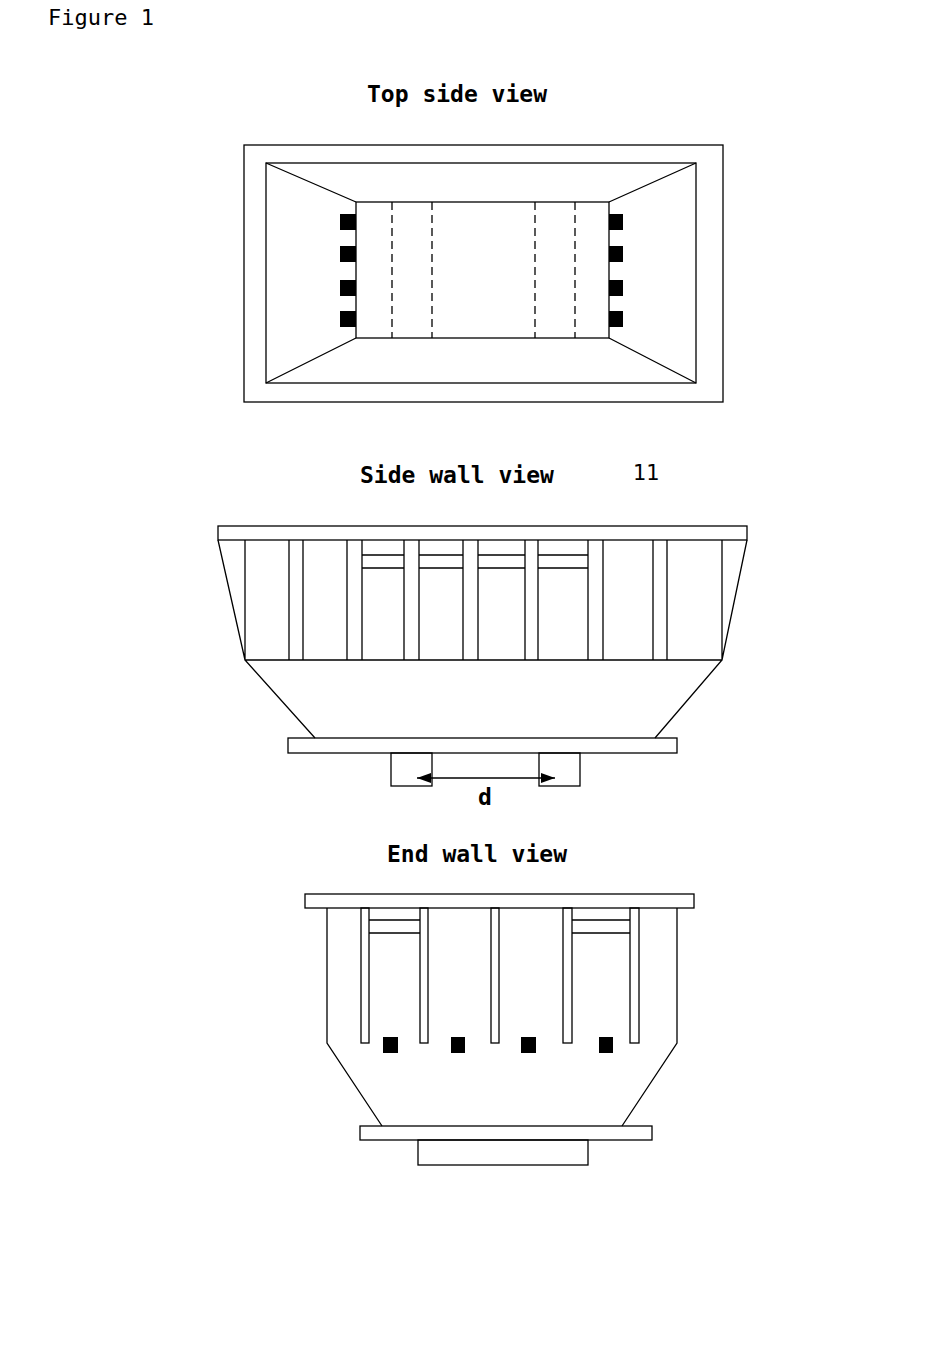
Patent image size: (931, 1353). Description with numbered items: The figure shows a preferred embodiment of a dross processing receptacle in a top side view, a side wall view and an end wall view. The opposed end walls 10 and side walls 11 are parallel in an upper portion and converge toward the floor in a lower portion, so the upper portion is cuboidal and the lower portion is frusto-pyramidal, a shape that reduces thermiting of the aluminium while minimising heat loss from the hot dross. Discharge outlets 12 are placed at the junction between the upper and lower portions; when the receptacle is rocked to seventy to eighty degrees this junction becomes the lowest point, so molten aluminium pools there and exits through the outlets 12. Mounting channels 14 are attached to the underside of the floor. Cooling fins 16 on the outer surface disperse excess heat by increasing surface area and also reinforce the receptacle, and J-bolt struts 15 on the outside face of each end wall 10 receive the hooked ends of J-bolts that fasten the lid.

The end wall 10 is at (704, 334).
The side wall 11 is at (641, 703).
The discharge outlet 12 is at (627, 224).
The mounting channel 14 is at (553, 265).
The J-bolt strut 15 is at (400, 933).
The cooling fin 16 is at (382, 565).